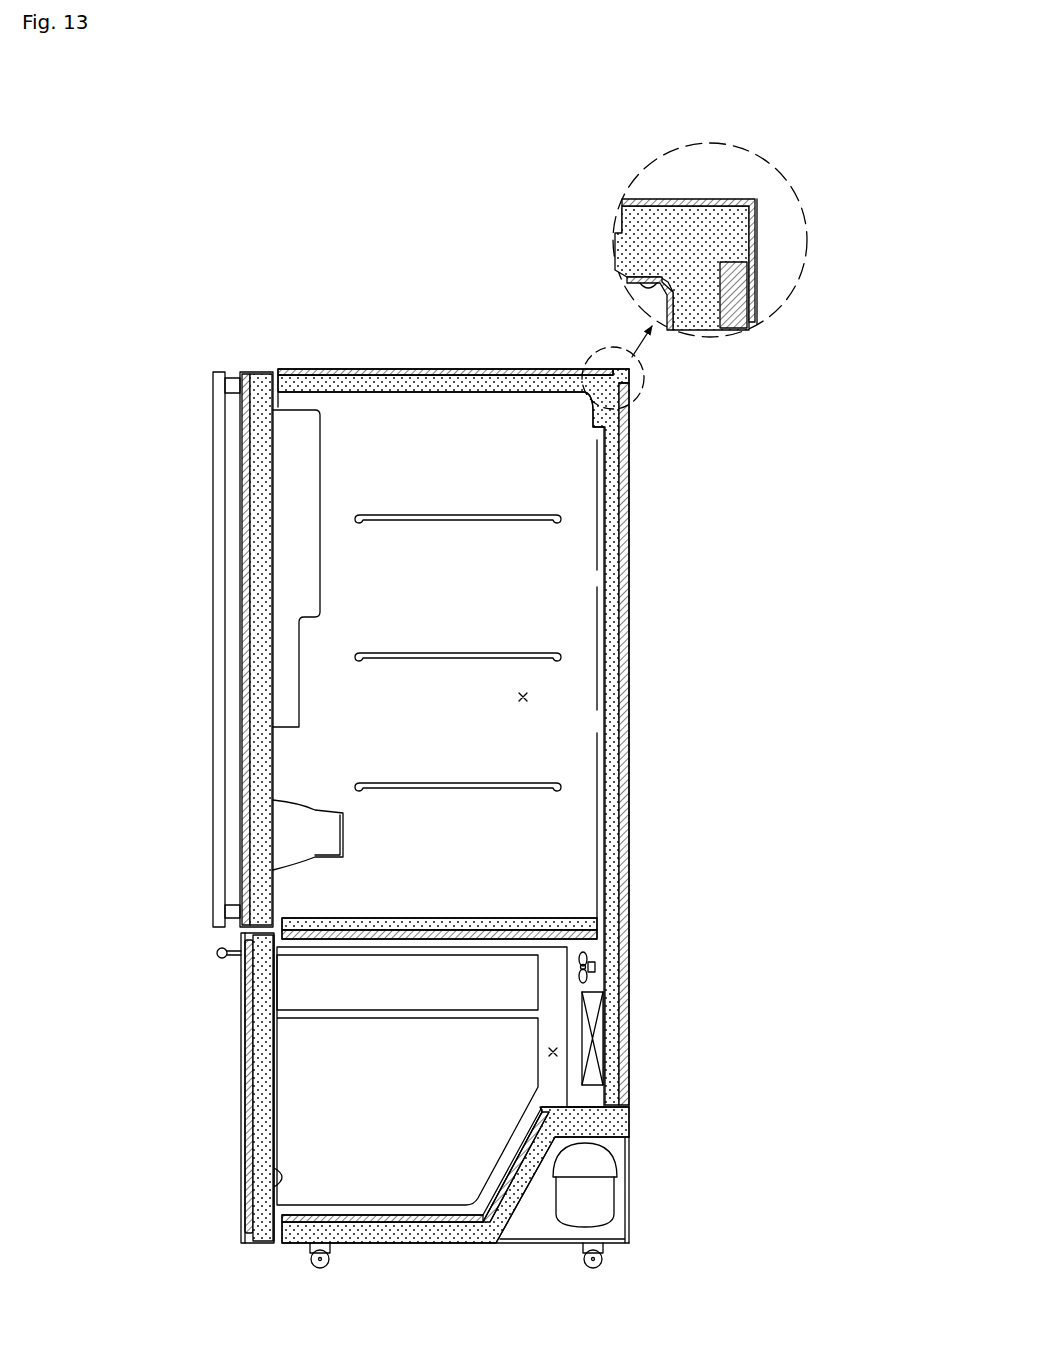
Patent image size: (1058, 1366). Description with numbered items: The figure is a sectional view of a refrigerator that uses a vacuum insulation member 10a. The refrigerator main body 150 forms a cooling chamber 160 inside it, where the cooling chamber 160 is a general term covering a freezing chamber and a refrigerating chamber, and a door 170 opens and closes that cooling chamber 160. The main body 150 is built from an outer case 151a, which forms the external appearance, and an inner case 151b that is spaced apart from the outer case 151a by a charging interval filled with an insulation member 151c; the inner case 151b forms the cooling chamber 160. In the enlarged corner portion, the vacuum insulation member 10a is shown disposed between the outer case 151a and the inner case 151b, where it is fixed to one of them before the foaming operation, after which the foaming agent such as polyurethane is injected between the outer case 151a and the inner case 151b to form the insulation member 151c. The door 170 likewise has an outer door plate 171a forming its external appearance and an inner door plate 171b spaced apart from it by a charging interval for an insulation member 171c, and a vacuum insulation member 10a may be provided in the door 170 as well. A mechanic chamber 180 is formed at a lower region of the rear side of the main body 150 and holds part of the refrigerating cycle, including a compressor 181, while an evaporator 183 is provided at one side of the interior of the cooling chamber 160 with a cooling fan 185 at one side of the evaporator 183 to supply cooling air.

The vacuum insulation member 10a is at (440, 369).
The refrigerator main body 150 is at (685, 194).
The outer case 151a is at (680, 198).
The inner case 151b is at (660, 275).
The insulation member 151c is at (715, 235).
The cooling chamber 160 is at (528, 695).
The door 170 is at (195, 808).
The outer door plate 171a is at (243, 1092).
The inner door plate 171b is at (270, 1197).
The insulation member 171c is at (260, 1146).
The mechanic chamber 180 is at (611, 1190).
The compressor 181 is at (605, 1197).
The evaporator 183 is at (603, 1015).
The cooling fan 185 is at (596, 967).